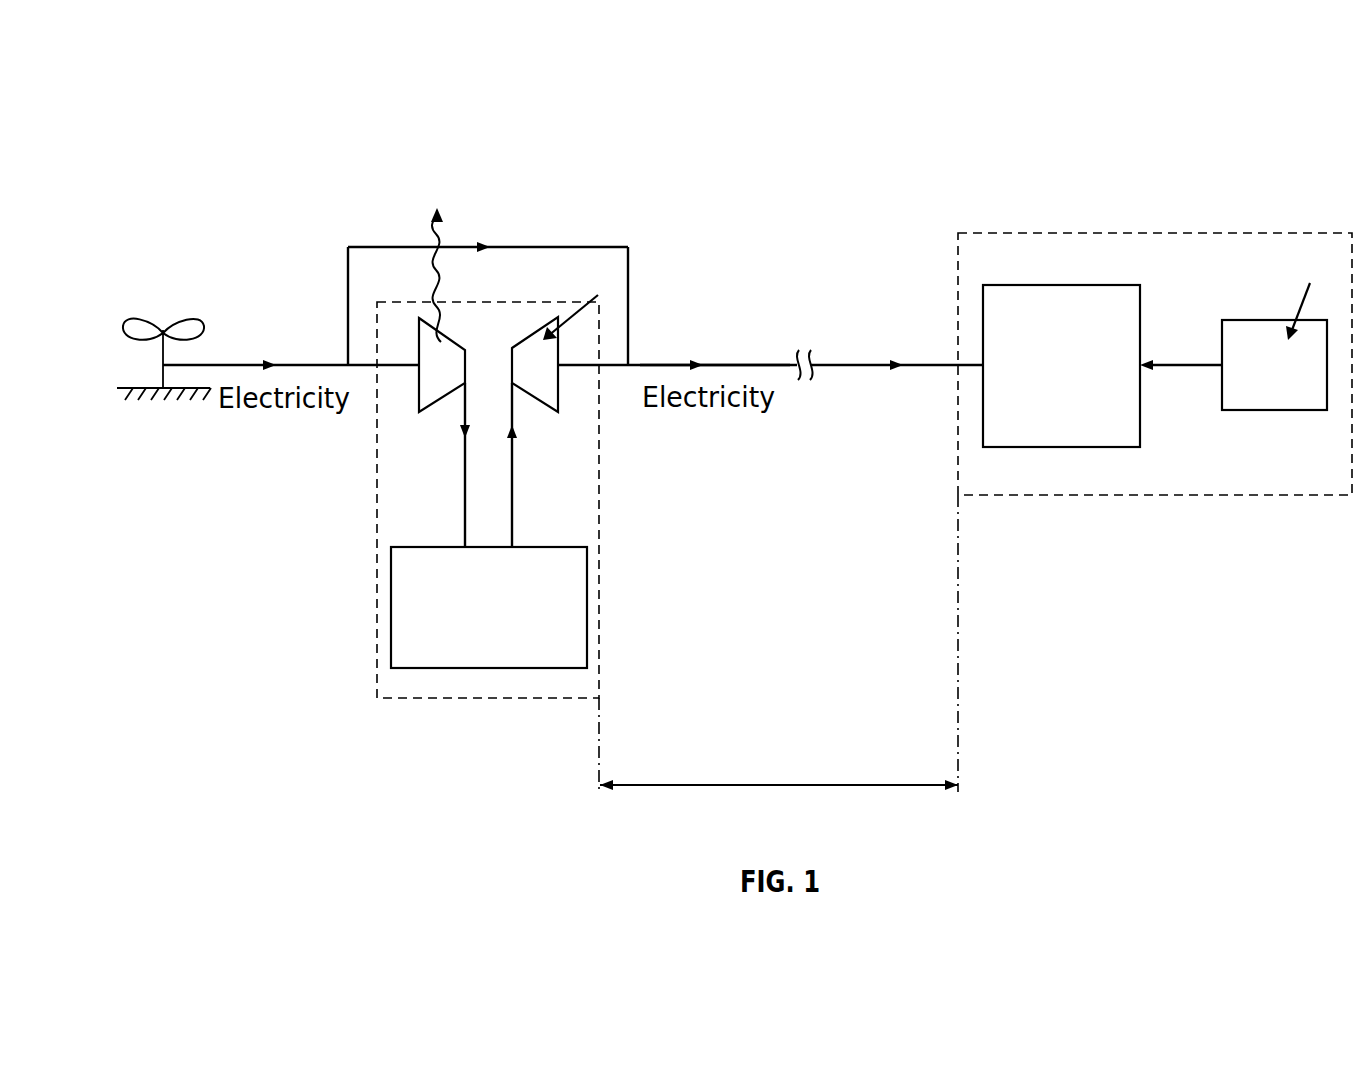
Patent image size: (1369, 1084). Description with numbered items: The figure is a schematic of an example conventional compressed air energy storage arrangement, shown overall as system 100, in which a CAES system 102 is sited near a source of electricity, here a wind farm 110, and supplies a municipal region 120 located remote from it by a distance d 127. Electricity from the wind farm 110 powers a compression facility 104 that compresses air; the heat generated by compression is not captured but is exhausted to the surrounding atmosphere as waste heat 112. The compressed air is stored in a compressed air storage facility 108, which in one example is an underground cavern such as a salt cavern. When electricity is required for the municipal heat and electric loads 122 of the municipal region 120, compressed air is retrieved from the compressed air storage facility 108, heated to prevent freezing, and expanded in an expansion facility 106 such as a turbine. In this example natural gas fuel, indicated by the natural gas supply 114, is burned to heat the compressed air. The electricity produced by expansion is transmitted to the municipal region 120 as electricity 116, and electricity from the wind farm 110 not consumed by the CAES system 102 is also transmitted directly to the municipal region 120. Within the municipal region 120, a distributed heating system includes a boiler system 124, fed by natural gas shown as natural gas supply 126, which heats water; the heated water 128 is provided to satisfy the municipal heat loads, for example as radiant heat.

The energy system 100 is at (192, 205).
The CAES system 102 is at (407, 700).
The compression facility 104 is at (426, 392).
The expansion facility 106 is at (551, 392).
The compressed air storage facility 108 is at (452, 547).
The wind farm 110 is at (135, 320).
The waste heat 112 is at (405, 170).
The natural gas supply to turbine 114 is at (600, 262).
The electricity 116 is at (733, 364).
The municipal region 120 is at (1025, 232).
The municipal heat and electric loads 122 is at (1050, 284).
The boiler system 124 is at (1280, 320).
The natural gas supply to boiler 126 is at (1308, 250).
The distance d 127 is at (780, 787).
The heated water 128 is at (1178, 410).